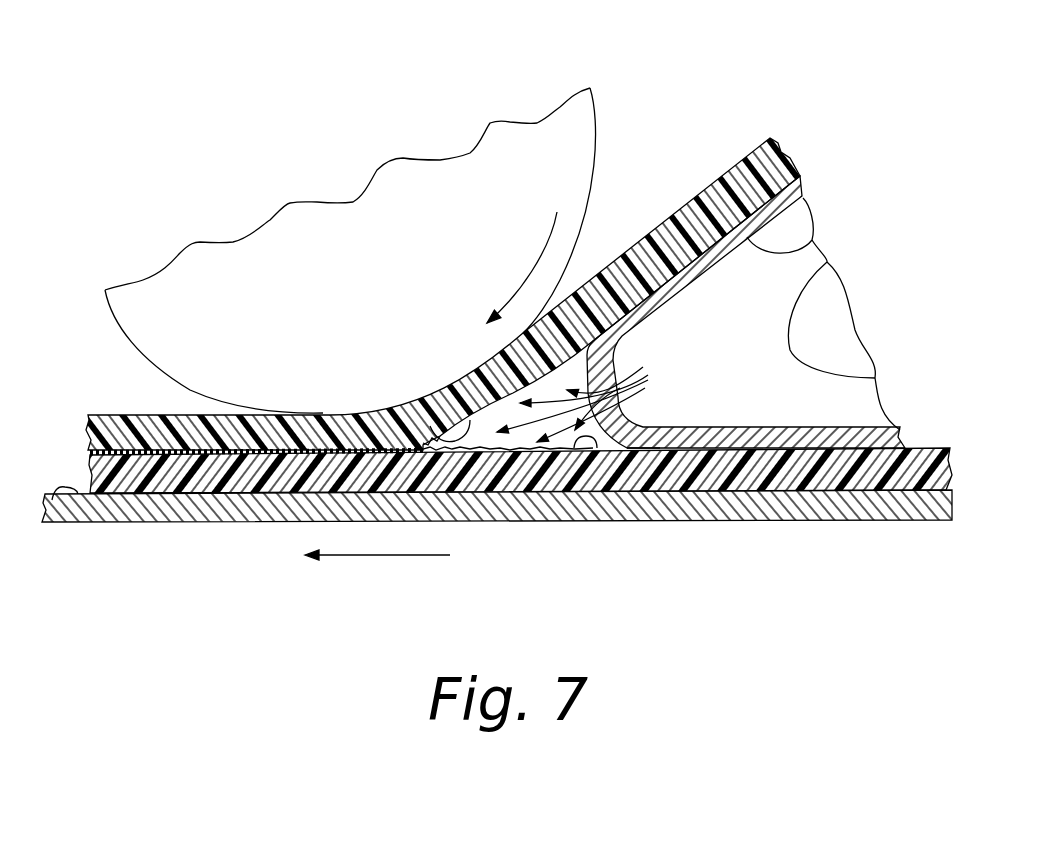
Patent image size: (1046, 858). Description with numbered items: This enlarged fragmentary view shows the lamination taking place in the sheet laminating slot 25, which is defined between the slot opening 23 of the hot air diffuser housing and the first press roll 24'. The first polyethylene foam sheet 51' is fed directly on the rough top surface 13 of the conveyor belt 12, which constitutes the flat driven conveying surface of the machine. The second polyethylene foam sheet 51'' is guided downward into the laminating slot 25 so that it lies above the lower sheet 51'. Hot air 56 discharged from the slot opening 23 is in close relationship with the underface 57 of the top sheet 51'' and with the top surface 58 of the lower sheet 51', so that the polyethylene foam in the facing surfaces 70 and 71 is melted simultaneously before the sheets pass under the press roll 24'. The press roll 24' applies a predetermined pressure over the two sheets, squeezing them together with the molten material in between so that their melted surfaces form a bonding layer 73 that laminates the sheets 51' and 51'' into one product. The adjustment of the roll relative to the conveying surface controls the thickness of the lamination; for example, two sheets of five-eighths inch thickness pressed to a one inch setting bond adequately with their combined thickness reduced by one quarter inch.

The conveyor belt 12 is at (632, 502).
The rough top surface 13 is at (52, 500).
The slot opening 23 is at (643, 380).
The first press roll 24' is at (350, 238).
The sheet laminating slot 25 is at (483, 440).
The first polyethylene foam sheet 51' is at (521, 523).
The second polyethylene foam sheet 51'' is at (445, 269).
The hot air 56 is at (632, 447).
The underface 57 is at (812, 238).
The top surface 58 is at (915, 432).
The melted surface 70 is at (423, 400).
The melted surface 71 is at (575, 447).
The bonding layer 73 is at (230, 455).